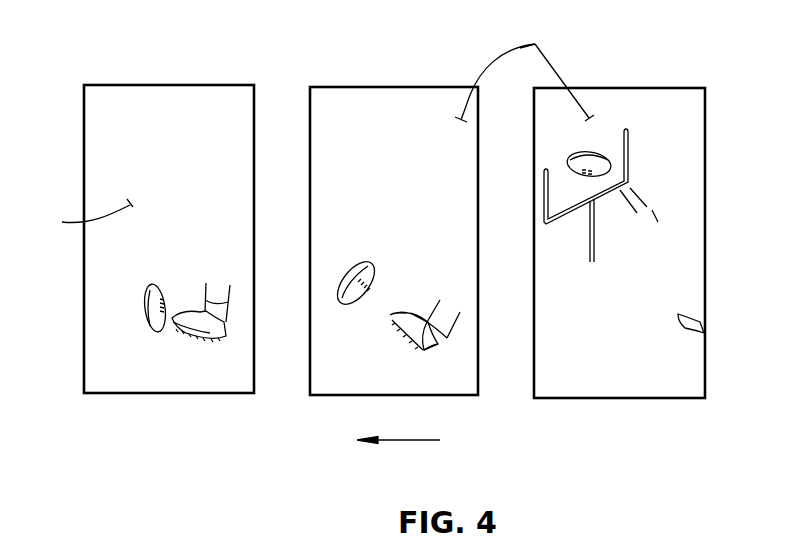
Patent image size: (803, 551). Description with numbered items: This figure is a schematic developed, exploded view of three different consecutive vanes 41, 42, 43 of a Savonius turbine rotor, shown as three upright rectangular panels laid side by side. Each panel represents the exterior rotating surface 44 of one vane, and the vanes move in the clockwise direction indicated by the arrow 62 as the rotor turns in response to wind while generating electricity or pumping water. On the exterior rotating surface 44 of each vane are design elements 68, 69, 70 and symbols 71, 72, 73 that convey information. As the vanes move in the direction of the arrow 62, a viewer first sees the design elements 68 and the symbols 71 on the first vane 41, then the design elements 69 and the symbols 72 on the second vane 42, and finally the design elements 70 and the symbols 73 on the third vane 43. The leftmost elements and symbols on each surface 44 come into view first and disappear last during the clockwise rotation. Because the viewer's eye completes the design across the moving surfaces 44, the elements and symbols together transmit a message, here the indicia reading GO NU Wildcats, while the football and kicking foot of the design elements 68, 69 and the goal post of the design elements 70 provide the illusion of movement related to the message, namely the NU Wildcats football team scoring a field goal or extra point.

The vane 41 is at (102, 251).
The vane 42 is at (393, 108).
The vane 43 is at (680, 179).
The exterior rotating surface 44 is at (314, 123).
The arrow 62 is at (390, 441).
The design elements 68 is at (222, 254).
The design elements 69 is at (420, 283).
The design elements 70 is at (622, 225).
The symbols 71 is at (196, 103).
The symbols 72 is at (402, 200).
The symbols 73 is at (586, 347).